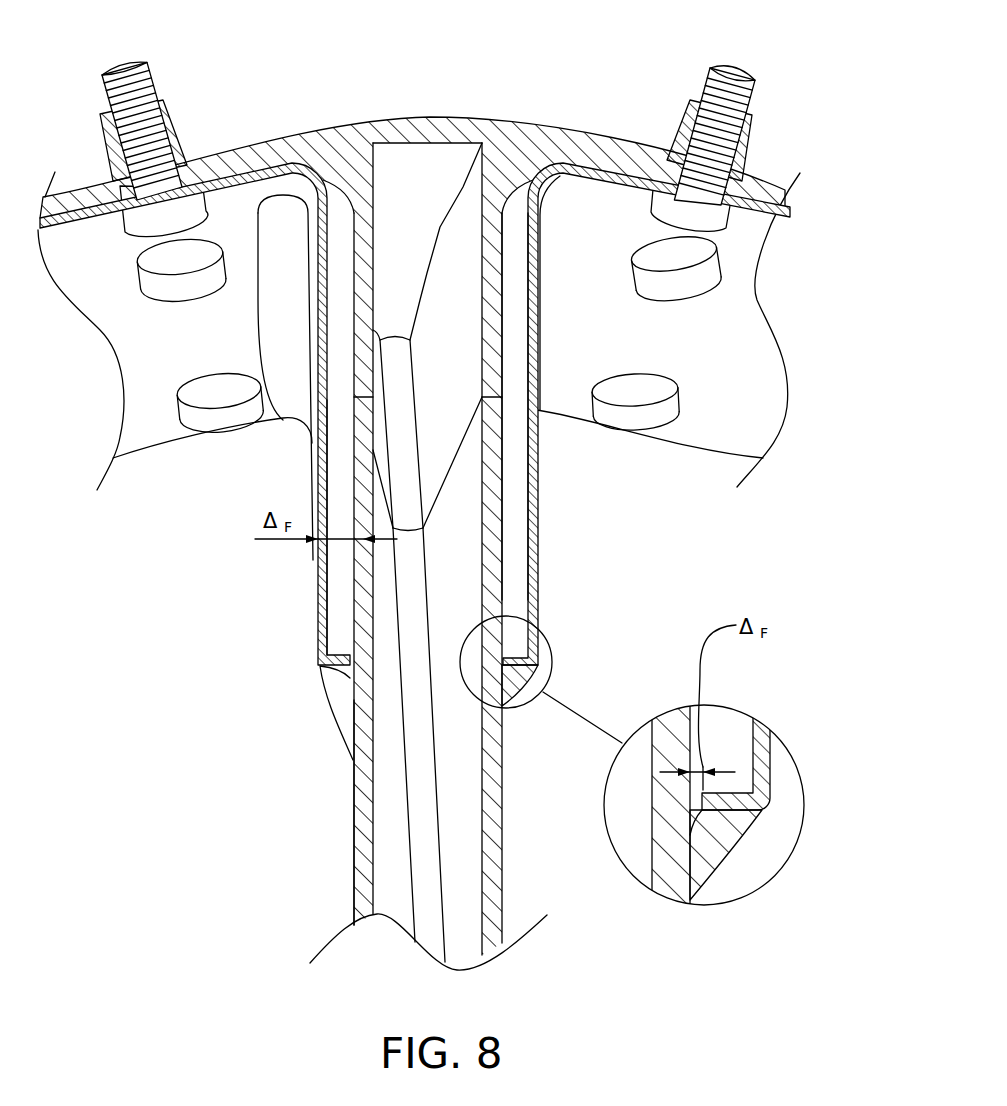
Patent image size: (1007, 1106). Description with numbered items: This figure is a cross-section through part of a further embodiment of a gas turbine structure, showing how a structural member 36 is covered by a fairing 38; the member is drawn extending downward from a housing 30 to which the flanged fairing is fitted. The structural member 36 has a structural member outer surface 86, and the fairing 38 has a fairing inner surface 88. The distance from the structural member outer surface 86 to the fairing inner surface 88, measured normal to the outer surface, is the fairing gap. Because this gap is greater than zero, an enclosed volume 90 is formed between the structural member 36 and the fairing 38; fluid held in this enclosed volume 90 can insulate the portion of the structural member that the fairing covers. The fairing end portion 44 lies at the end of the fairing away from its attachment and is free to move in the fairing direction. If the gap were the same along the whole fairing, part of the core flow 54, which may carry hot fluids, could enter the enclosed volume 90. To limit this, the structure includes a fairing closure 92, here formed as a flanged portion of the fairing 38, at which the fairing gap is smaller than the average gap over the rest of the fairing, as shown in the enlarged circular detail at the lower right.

The housing 30 is at (578, 128).
The structural member 36 is at (341, 856).
The fairing 38 is at (545, 597).
The fairing end portion 44 is at (537, 718).
The core flow 54 is at (335, 683).
The structural member outer surface 86 is at (342, 799).
The fairing inner surface 88 is at (342, 569).
The enclosed volume 90 is at (520, 465).
The fairing closure 92 is at (722, 810).